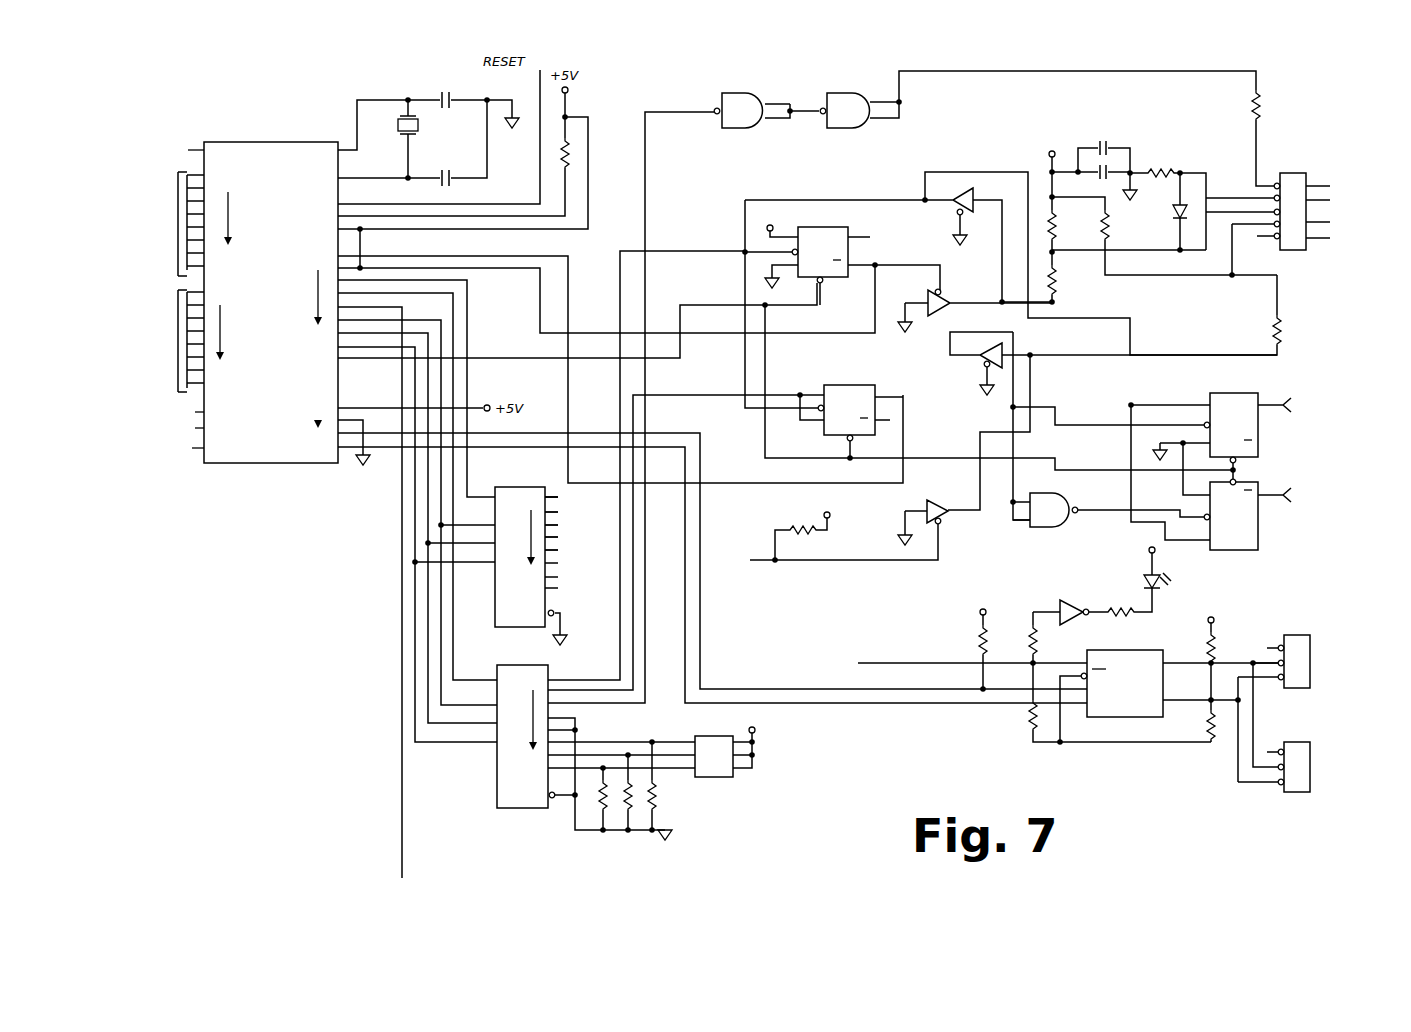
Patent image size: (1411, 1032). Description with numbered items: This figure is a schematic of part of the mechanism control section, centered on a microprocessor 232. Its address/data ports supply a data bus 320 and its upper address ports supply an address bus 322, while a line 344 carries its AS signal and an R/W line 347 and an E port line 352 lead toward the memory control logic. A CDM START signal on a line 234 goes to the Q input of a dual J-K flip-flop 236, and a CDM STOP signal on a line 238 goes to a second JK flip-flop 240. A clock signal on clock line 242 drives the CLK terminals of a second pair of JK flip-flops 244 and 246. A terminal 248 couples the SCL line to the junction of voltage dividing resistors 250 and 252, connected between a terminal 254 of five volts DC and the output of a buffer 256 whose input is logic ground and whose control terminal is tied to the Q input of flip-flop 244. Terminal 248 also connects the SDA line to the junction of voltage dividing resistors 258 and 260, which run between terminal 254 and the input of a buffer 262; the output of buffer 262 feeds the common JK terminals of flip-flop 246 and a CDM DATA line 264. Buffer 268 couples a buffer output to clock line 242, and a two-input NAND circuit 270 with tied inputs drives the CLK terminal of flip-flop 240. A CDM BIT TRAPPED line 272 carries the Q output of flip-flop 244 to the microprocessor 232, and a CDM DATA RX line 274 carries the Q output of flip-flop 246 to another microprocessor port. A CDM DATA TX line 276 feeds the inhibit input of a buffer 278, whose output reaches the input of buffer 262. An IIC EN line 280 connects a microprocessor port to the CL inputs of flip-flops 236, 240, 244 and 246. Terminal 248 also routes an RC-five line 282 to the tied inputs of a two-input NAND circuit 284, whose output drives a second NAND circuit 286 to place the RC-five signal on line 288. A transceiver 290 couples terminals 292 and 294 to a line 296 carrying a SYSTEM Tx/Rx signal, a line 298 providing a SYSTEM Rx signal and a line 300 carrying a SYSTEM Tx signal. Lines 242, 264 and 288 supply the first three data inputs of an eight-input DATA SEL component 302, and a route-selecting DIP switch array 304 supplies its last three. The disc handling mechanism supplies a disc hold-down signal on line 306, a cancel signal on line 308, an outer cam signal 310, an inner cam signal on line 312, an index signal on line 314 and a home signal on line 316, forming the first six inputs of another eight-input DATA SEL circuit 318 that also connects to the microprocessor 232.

The microprocessor 232 is at (268, 463).
The data bus 320 is at (178, 232).
The address bus 322 is at (178, 356).
The line 344 is at (204, 412).
The R/W line 347 is at (204, 428).
The E port line 352 is at (192, 448).
The second two-input NAND circuit 286 is at (742, 94).
The two-input NAND circuit 284 is at (845, 94).
The RC5 signal line 288 is at (645, 162).
The +5 volt terminal 254 is at (1050, 154).
The terminal 248 is at (1293, 173).
The RC5 line 282 is at (1310, 182).
The buffer 268 is at (970, 190).
The JK flip-flop 244 is at (818, 228).
The clock line 242 is at (715, 258).
The voltage dividing resistor 250 is at (1085, 224).
The voltage dividing resistor 258 is at (1112, 218).
The buffer 256 is at (948, 296).
The voltage dividing resistor 252 is at (1058, 286).
The voltage dividing resistor 260 is at (1283, 326).
The CDM BIT TRAPPED line 272 is at (597, 333).
The IIC EN line 280 is at (498, 360).
The buffer 262 is at (985, 372).
The JK flip-flop 246 is at (862, 385).
The CDM DATA line 264 is at (668, 397).
The dual J-K flip-flop 236 is at (1235, 393).
The CDM START line 234 is at (1284, 407).
The CDM DATA RX line 274 is at (712, 485).
The buffer 278 is at (932, 499).
The two-input NAND circuit 270 is at (1063, 496).
The CDM STOP line 238 is at (1284, 498).
The second JK flip-flop 240 is at (1238, 550).
The CDM DATA TX line 276 is at (778, 565).
The disc hold down signal line 306 is at (556, 495).
The cancel signal line 308 is at (558, 497).
The outer cam signal 310 is at (558, 512).
The inner cam signal line 312 is at (558, 525).
The index signal line 314 is at (558, 537).
The home signal line 316 is at (558, 550).
The eight input DATA SEL circuit 318 is at (525, 627).
The SYSTEM Rx line 298 is at (780, 689).
The SYSTEM Tx/Rx line 296 is at (1058, 660).
The terminal 292 is at (1297, 635).
The transceiver 290 is at (1142, 717).
The terminal 294 is at (1297, 742).
The SYSTEM Tx line 300 is at (808, 705).
The eight input DATA SEL component 302 is at (525, 808).
The route electing DIP switch array 304 is at (712, 777).